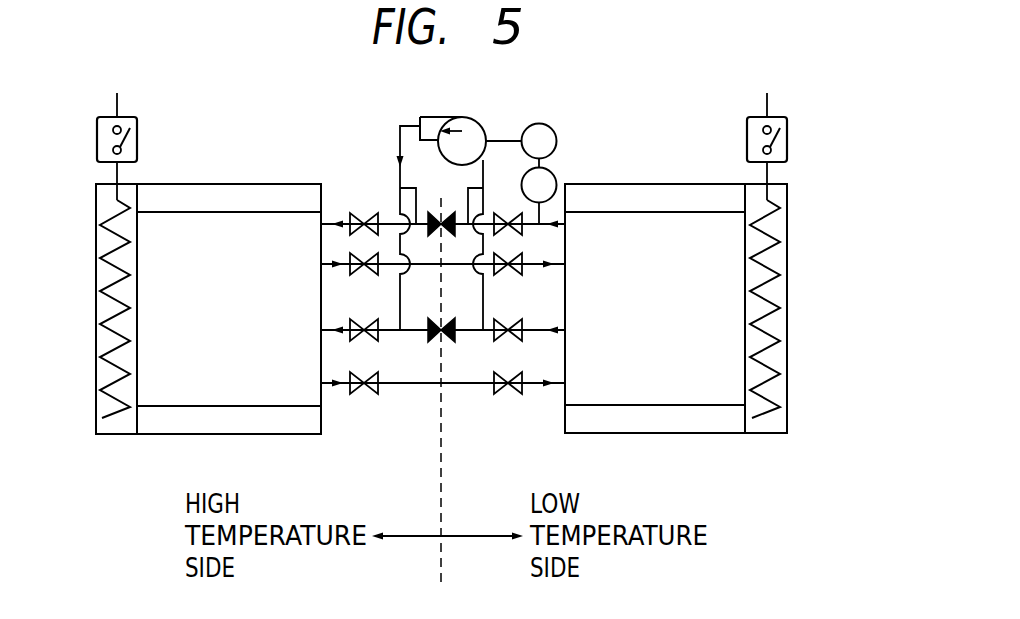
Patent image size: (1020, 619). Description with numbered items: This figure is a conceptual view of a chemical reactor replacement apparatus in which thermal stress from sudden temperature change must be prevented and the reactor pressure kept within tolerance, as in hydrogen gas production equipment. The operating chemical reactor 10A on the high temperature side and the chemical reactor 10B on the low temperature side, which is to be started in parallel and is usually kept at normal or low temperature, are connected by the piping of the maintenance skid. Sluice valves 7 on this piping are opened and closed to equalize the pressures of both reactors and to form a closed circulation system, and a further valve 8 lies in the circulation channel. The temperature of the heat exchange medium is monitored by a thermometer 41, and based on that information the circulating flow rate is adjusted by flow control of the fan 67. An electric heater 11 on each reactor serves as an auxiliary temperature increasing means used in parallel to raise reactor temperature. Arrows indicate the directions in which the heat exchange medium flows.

The sluice valve 7 is at (373, 392).
The control valve 8 is at (428, 343).
The chemical reactor 10A is at (162, 425).
The chemical reactor 10B is at (670, 417).
The electric heater 11 is at (95, 418).
The thermometer 41 is at (552, 172).
The fan 67 is at (468, 116).